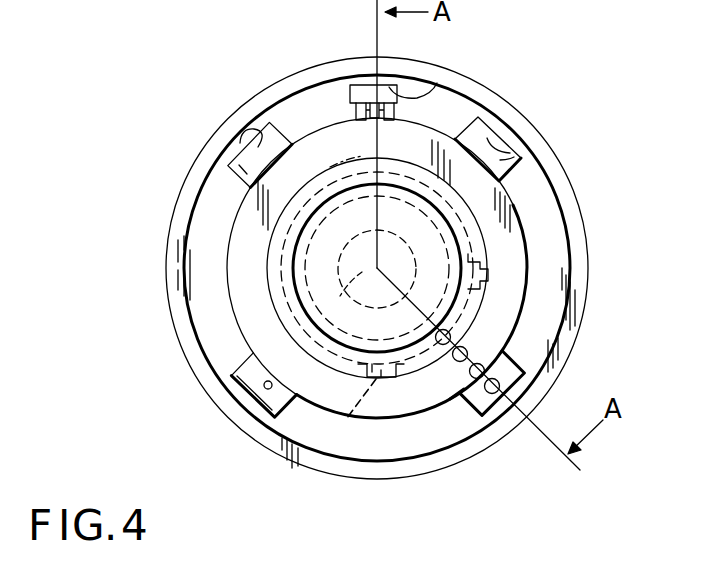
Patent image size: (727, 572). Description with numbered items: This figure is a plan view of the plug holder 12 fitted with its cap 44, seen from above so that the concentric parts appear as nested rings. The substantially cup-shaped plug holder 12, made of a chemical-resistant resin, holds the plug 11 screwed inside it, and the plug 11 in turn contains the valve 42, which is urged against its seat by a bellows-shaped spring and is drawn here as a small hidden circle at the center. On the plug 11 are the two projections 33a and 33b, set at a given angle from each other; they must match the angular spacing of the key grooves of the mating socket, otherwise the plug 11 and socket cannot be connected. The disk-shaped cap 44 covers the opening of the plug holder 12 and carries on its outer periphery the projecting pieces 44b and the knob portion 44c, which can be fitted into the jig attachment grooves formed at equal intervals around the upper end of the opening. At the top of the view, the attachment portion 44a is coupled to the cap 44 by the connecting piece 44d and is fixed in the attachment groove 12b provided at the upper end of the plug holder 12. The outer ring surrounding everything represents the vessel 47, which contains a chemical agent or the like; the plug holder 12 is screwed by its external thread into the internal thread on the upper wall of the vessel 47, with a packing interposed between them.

The plug 11 is at (284, 290).
The plug holder 12 is at (578, 331).
The attachment groove 12b is at (410, 96).
The projection 33a is at (487, 276).
The projection 33b is at (359, 409).
The valve 42 is at (369, 281).
The cap 44 is at (440, 264).
The attachment portion 44a is at (362, 93).
The projecting pieces 44b is at (240, 168).
The knob portion 44c is at (475, 378).
The connecting piece 44d is at (357, 110).
The vessel 47 is at (250, 143).